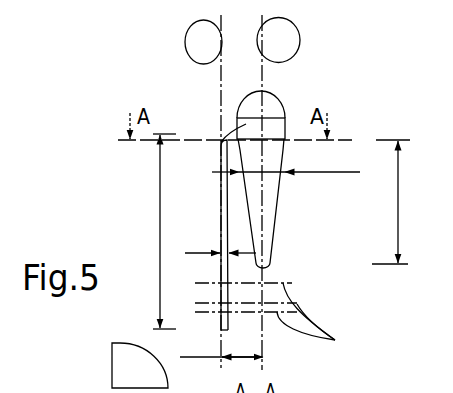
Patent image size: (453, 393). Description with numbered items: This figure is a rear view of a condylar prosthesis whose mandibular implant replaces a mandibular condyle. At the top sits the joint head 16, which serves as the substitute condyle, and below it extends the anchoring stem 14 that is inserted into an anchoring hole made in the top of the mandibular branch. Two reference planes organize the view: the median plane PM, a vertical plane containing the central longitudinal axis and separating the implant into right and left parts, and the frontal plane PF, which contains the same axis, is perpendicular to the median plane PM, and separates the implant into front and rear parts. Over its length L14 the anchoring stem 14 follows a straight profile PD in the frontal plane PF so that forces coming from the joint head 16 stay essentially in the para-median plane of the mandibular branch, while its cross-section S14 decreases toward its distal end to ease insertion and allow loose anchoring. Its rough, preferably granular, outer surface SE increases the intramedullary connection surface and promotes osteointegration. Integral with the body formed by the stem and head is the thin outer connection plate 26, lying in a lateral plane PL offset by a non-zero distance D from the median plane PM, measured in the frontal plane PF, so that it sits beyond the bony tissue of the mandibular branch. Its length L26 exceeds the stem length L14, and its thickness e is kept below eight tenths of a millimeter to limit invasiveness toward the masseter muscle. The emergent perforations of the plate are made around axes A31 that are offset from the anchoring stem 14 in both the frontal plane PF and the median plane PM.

The anchoring stem 14 is at (273, 240).
The joint head 16 is at (273, 93).
The outer connection plate 26 is at (218, 212).
The axes of the emergent perforations A31 is at (320, 327).
The straight profile PD is at (262, 183).
The outer surface SE is at (262, 215).
The lateral plane PL is at (203, 42).
The median plane PM is at (278, 40).
The frontal plane PF is at (140, 365).
The length of the connection plate L26 is at (144, 231).
The length of the anchoring stem L14 is at (407, 202).
The cross-section of the anchoring stem S14 is at (286, 158).
The thickness of the connection plate e is at (218, 244).
The distance D is at (221, 346).